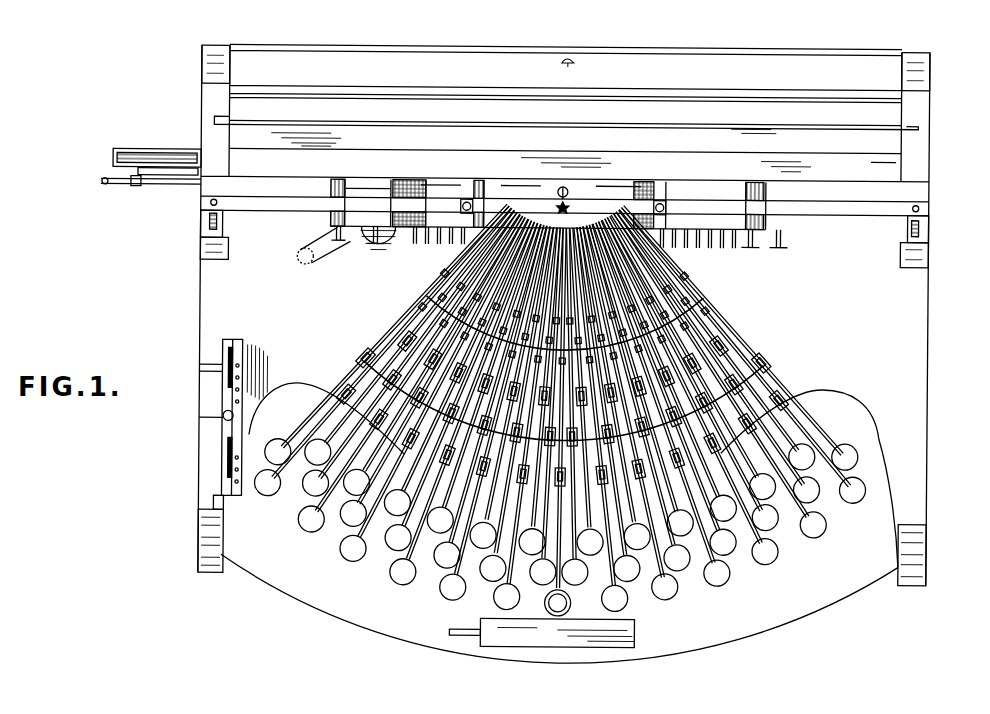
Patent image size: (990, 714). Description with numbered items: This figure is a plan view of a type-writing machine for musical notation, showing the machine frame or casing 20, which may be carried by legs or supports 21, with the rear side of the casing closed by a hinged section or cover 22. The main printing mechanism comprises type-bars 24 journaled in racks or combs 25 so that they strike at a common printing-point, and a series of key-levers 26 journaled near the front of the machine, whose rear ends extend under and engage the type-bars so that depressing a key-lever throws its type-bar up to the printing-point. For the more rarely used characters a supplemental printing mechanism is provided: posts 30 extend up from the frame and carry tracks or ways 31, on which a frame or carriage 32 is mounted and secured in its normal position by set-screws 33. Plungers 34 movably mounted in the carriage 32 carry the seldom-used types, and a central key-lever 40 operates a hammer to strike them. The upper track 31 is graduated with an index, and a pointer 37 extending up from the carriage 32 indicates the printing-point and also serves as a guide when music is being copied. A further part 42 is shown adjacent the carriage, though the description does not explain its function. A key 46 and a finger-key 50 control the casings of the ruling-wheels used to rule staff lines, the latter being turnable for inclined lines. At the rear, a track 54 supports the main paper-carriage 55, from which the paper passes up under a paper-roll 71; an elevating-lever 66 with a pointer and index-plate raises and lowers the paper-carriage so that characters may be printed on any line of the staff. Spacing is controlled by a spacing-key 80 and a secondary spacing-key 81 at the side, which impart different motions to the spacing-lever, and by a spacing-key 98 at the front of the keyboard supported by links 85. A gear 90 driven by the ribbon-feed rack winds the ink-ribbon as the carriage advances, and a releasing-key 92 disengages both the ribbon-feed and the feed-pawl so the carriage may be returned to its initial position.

The machine frame or casing 20 is at (913, 314).
The legs or supports 21 is at (200, 50).
The hinged section or cover 22 is at (566, 113).
The type-bars 24 is at (428, 338).
The racks or combs 25 is at (366, 366).
The key-levers 26 is at (351, 556).
The posts 30 is at (205, 249).
The tracks or ways 31 is at (858, 212).
The frame or carriage 32 is at (748, 222).
The set-screws 33 is at (462, 205).
The plungers 34 is at (437, 243).
The pointer 37 is at (572, 198).
The central key-lever 40 is at (558, 612).
The release levers 42 is at (375, 247).
The key 46 is at (338, 244).
The finger-key 50 is at (778, 247).
The track 54 is at (878, 160).
The main paper-carriage 55 is at (132, 154).
The elevating-lever 66 is at (224, 421).
The paper-roll 71 is at (150, 184).
The spacing-key 80 is at (222, 358).
The secondary spacing-key 81 is at (222, 416).
The links 85 is at (467, 637).
The gear 90 is at (396, 250).
The releasing-key 92 is at (312, 252).
The spacing-key 98 is at (610, 640).